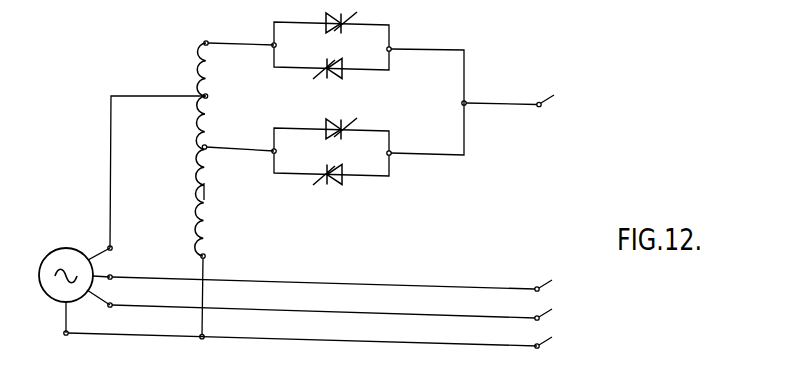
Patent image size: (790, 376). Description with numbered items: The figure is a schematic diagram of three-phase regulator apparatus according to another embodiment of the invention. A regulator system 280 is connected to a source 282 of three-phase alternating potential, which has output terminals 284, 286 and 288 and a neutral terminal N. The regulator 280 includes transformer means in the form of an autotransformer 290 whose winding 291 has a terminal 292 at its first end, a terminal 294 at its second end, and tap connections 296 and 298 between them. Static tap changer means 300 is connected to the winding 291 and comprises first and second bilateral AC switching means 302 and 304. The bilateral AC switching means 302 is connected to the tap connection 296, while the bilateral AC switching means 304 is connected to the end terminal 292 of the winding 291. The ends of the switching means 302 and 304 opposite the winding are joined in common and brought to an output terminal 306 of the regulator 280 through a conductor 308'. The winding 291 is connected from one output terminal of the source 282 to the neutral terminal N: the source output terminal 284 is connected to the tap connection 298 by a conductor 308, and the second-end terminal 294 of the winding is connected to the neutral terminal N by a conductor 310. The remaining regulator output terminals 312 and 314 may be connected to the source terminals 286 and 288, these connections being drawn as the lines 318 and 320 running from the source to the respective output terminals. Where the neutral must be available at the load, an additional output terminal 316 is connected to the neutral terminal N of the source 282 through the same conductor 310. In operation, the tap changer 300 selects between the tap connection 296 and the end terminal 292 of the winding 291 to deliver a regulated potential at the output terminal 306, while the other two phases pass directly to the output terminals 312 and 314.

The regulator system 280 is at (115, 46).
The source of three-phase alternating potential 282 is at (60, 248).
The output terminal 284 is at (112, 247).
The output terminal 286 is at (112, 276).
The output terminal 288 is at (112, 304).
The autotransformer 290 is at (188, 174).
The winding 291 is at (205, 191).
The terminal 292 is at (208, 41).
The terminal 294 is at (205, 254).
The tap connection 296 is at (206, 146).
The tap connection 298 is at (225, 91).
The static tap changer means 300 is at (368, 98).
The first bilateral AC switching means 302 is at (316, 164).
The second bilateral AC switching means 304 is at (325, 56).
The output terminal 306 is at (567, 95).
The conductor 308 is at (158, 158).
The conductor 308' is at (499, 91).
The conductor 310 is at (170, 336).
The output terminal 312 is at (557, 283).
The output terminal 314 is at (559, 311).
The additional output terminal 316 is at (559, 340).
The conductor 318 is at (510, 288).
The conductor 320 is at (507, 317).
The neutral terminal N is at (63, 334).